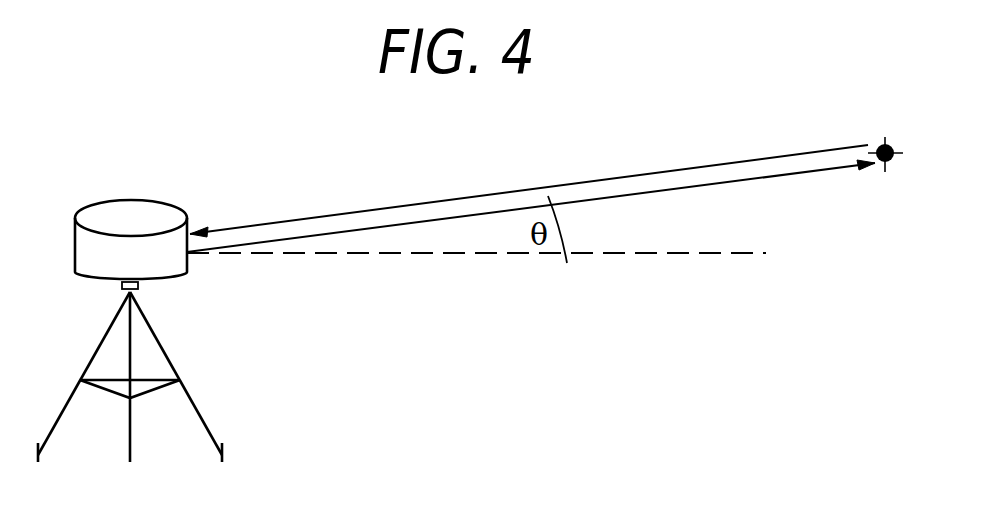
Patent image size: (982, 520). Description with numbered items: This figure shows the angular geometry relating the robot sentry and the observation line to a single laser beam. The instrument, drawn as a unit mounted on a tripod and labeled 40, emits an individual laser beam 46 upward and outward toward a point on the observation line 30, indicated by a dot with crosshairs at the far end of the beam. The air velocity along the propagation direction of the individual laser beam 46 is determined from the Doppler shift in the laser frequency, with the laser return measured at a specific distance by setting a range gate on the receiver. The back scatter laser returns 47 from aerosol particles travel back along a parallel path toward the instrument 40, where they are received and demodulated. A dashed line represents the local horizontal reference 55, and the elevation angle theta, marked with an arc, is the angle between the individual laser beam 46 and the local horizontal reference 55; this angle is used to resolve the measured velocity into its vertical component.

The surveying instrument on tripod 40 is at (127, 199).
The back scatter laser returns 47 is at (595, 178).
The individual laser beam 46 is at (731, 182).
The observation line 30 is at (886, 143).
The local horizontal reference 55 is at (703, 253).